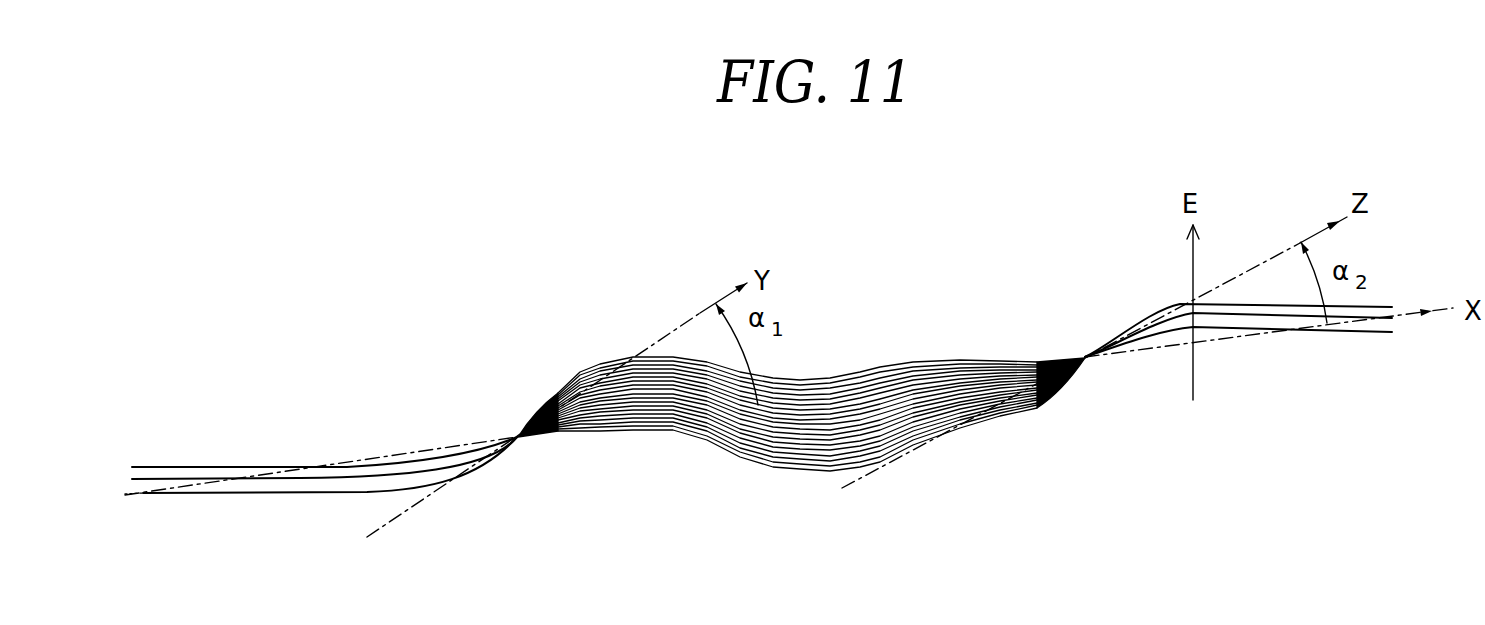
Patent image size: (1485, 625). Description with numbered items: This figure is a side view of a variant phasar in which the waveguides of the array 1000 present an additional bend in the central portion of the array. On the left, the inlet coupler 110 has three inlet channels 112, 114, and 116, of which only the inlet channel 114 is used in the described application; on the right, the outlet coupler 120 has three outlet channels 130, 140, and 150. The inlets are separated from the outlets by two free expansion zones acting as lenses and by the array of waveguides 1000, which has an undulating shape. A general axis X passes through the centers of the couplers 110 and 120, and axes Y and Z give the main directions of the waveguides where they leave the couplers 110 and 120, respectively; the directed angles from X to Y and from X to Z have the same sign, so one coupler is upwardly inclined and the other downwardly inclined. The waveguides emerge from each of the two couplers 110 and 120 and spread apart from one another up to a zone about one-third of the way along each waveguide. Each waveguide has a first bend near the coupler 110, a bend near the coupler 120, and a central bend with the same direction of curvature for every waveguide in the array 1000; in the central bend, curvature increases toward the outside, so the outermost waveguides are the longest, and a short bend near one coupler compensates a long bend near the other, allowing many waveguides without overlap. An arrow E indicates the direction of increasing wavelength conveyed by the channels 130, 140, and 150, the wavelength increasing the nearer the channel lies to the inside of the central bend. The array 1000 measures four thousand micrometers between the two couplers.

The inlet coupler 110 is at (517, 437).
The inlet channel 112 is at (157, 467).
The inlet channel 114 is at (263, 479).
The inlet channel 116 is at (218, 493).
The outlet coupler 120 is at (1085, 357).
The outlet channel 130 is at (1152, 307).
The outlet channel 140 is at (1257, 316).
The outlet channel 150 is at (1357, 333).
The array of waveguides 1000 is at (850, 367).